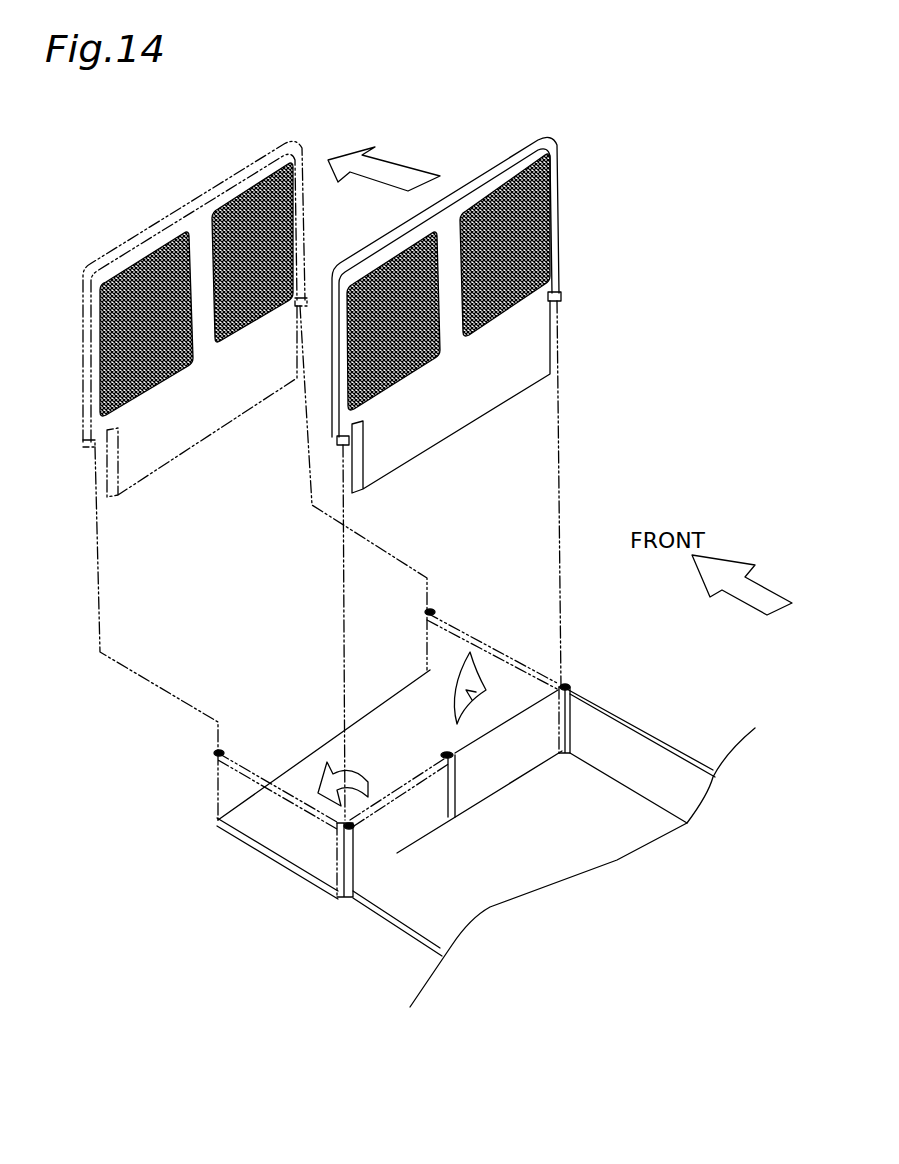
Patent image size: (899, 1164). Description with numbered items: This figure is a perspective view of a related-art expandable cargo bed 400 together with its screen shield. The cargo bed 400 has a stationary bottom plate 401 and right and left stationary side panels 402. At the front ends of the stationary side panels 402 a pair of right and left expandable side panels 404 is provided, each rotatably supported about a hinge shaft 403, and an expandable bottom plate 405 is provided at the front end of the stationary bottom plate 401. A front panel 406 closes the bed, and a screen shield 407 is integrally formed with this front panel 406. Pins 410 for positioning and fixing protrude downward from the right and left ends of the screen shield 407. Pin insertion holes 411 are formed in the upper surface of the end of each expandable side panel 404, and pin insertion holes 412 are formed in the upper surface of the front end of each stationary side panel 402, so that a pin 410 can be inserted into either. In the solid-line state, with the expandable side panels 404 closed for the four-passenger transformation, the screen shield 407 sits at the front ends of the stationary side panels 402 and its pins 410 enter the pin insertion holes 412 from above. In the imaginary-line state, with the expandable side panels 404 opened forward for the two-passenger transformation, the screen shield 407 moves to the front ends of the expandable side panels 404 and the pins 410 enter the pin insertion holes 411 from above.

The cargo bed 400 is at (769, 686).
The stationary bottom plate 401 is at (622, 853).
The stationary side panels 402 is at (667, 740).
The hinge shafts 403 is at (567, 680).
The expandable side panels 404 is at (536, 665).
The expandable bottom plate 405 is at (317, 760).
The front panel 406 is at (147, 458).
The screen shield 407 is at (175, 217).
The pins 410 is at (560, 300).
The pin insertion holes 411 is at (430, 610).
The pin insertion holes 412 is at (568, 685).